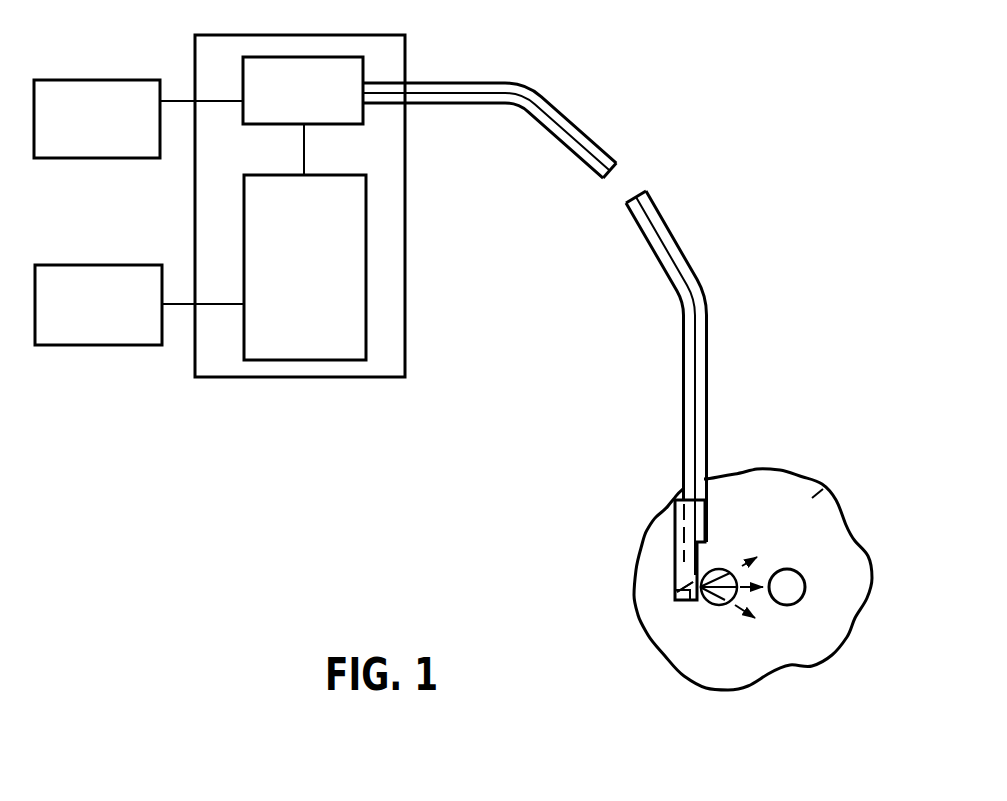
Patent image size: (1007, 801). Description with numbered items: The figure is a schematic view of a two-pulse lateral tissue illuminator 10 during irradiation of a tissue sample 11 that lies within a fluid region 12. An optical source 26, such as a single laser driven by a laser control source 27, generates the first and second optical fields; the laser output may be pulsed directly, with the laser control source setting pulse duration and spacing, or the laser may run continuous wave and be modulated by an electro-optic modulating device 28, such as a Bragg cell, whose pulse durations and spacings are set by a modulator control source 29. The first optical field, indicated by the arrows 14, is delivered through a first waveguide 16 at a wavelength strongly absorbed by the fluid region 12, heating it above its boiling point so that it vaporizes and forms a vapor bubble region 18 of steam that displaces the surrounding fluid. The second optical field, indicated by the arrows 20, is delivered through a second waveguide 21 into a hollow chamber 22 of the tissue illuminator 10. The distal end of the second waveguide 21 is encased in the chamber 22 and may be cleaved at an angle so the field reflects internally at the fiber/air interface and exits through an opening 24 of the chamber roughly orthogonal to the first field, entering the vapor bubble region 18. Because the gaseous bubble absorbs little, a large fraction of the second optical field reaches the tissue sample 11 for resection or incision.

The tissue illuminator 10 is at (667, 568).
The tissue sample 11 is at (803, 580).
The fluid region 12 is at (817, 478).
The arrows indicating first optical field 14 is at (702, 565).
The first waveguide 16 is at (707, 400).
The vapor bubble region 18 is at (717, 610).
The arrows indicating second optical field 20 is at (675, 602).
The second waveguide 21 is at (672, 262).
The hollow chamber 22 is at (672, 528).
The opening 24 is at (707, 598).
The optical source 26 is at (277, 274).
The laser control source 27 is at (74, 319).
The electro-optic modulating device 28 is at (277, 101).
The modulator control source 29 is at (74, 134).